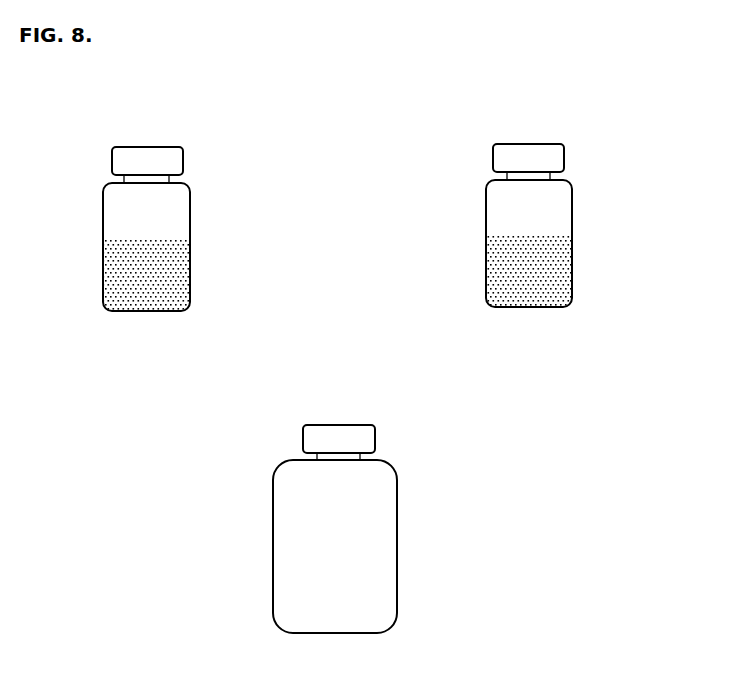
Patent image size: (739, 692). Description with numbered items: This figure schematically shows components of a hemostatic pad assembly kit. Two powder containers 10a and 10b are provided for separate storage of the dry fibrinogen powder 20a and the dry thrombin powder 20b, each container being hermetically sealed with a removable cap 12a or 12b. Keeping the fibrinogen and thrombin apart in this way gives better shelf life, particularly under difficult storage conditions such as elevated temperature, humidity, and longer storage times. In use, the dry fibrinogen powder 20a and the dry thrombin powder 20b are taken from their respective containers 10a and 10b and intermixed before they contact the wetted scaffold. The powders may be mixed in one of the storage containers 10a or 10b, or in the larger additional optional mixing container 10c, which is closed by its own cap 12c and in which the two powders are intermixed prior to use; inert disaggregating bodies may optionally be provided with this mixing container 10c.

The powder container 10a is at (221, 224).
The removable cap 12a is at (201, 128).
The dry fibrinogen powder 20a is at (205, 275).
The powder container 10b is at (604, 221).
The removable cap 12b is at (583, 124).
The dry thrombin powder 20b is at (588, 271).
The mixing container 10c is at (408, 543).
The removable cap 12c is at (391, 405).